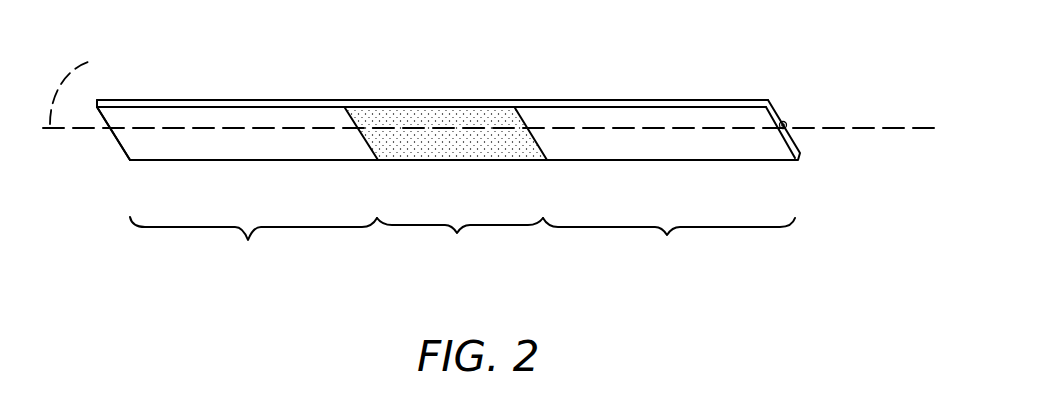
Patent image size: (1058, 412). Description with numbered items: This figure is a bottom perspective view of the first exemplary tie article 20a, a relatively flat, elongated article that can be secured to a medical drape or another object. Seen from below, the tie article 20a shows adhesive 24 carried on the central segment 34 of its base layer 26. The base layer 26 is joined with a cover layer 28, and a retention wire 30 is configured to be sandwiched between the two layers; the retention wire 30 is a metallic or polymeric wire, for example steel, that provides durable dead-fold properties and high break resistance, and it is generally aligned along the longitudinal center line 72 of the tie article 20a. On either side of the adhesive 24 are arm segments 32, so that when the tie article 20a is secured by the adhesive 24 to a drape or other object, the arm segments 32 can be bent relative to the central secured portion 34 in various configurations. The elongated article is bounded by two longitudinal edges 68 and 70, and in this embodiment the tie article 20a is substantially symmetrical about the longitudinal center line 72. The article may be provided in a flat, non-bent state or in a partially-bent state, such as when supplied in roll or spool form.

The tie article 20a is at (717, 61).
The adhesive 24 is at (448, 148).
The base layer 26 is at (680, 150).
The cover layer 28 is at (768, 100).
The retention wire 30 is at (790, 124).
The arm segments 32 is at (462, 242).
The central segment 34 is at (460, 240).
The longitudinal edge 68 is at (177, 160).
The longitudinal edge 70 is at (263, 102).
The longitudinal center line 72 is at (84, 87).